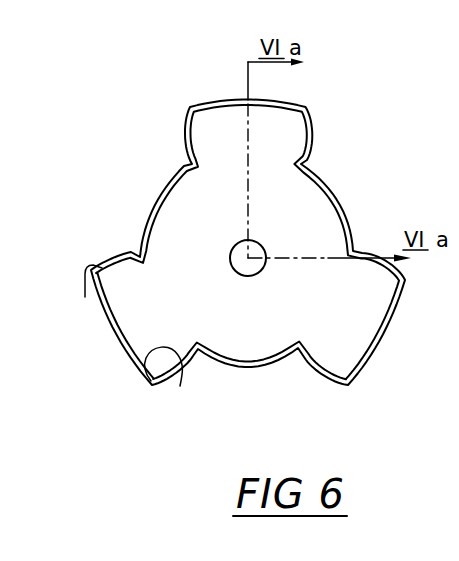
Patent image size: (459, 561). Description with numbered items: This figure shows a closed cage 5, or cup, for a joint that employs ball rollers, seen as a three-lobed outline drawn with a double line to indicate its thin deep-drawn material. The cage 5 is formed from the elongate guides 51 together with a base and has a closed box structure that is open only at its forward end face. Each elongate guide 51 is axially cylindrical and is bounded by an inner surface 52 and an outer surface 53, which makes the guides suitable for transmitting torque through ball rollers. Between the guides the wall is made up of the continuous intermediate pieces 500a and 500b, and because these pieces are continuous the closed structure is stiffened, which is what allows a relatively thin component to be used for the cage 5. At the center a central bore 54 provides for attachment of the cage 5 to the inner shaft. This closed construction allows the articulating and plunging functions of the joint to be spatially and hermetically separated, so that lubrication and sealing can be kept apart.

The cage 5 is at (328, 188).
The elongate guides 51 is at (223, 102).
The inner surface 52 is at (119, 275).
The outer surface 53 is at (85, 297).
The central bore 54 is at (246, 276).
The continuous intermediate piece 500a is at (306, 138).
The continuous intermediate piece 500b is at (347, 208).